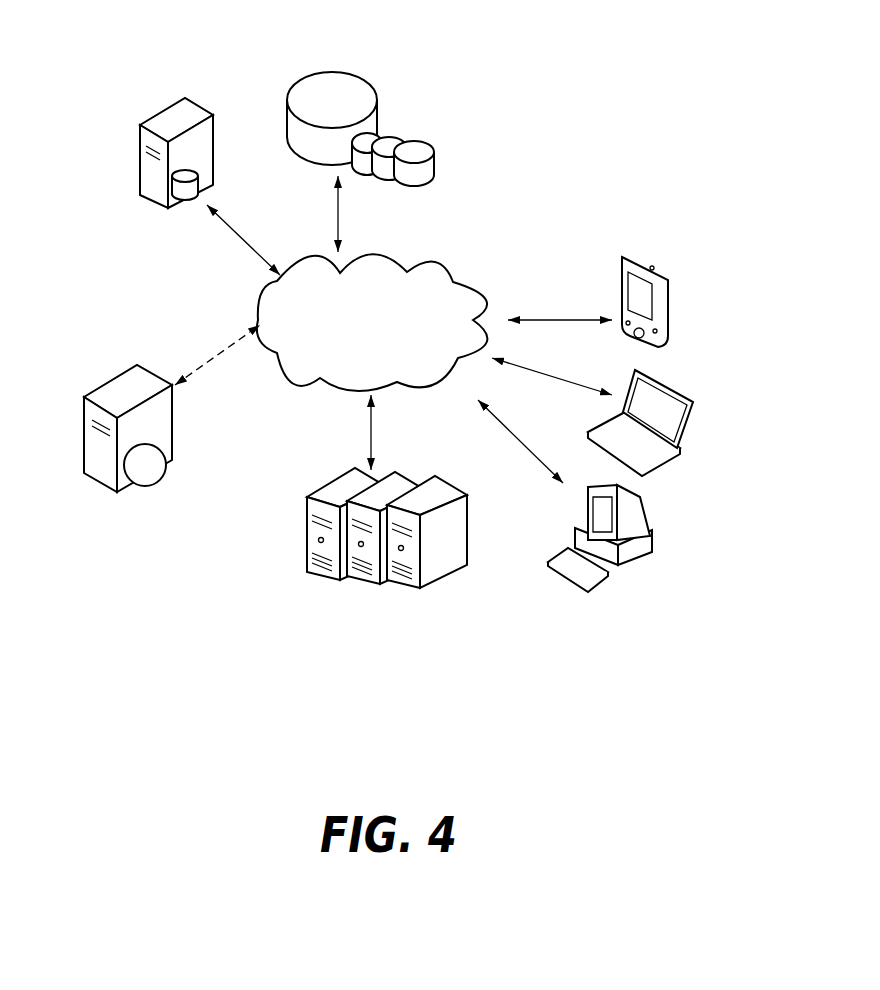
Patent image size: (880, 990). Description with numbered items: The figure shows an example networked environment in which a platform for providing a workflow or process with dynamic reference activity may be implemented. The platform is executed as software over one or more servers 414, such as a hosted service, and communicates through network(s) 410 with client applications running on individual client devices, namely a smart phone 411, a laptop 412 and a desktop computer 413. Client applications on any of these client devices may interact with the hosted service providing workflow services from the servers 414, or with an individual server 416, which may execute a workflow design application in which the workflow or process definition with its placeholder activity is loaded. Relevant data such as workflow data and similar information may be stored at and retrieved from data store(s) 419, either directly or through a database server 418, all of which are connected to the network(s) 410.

The network(s) 410 is at (375, 247).
The smart phone 411 is at (685, 256).
The laptop 412 is at (675, 373).
The desktop computer 413 is at (658, 495).
The servers 414 is at (335, 478).
The individual server 416 is at (105, 378).
The database server 418 is at (178, 218).
The data store(s) 419 is at (348, 48).